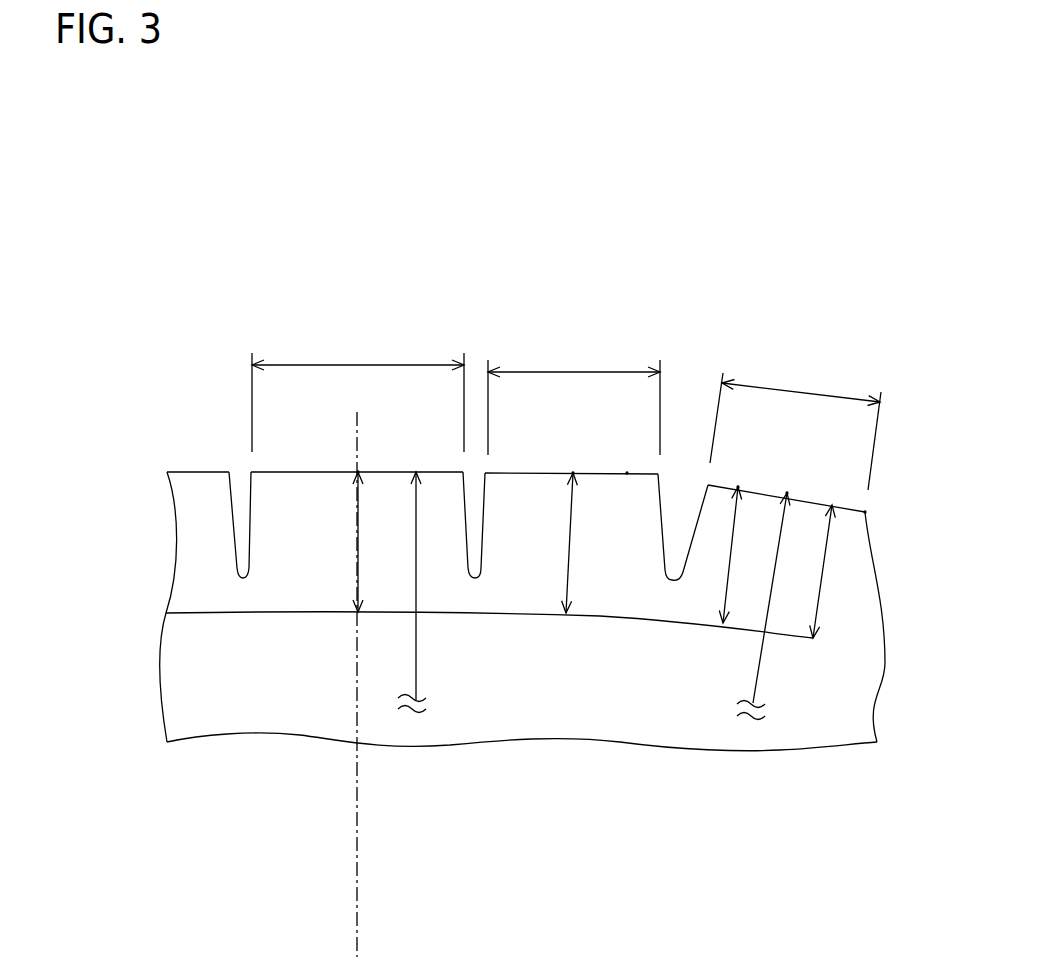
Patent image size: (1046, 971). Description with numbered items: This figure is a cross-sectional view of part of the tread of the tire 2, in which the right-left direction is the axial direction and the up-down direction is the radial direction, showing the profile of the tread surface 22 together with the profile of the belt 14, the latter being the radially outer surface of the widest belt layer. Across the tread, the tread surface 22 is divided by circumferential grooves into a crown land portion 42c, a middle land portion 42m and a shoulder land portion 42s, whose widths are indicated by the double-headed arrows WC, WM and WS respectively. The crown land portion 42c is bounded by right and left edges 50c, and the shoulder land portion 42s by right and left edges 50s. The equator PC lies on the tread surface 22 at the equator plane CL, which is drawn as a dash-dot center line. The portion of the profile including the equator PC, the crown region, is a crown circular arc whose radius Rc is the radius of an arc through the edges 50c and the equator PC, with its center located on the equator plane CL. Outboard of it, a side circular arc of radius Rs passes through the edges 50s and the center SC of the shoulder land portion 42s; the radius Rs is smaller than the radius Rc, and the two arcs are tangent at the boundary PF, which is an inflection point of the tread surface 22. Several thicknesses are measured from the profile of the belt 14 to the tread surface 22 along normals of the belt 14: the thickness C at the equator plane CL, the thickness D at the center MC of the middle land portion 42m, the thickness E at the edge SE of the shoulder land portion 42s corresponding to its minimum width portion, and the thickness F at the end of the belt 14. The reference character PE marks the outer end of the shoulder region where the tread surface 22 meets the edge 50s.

The tire 2 is at (138, 368).
The tread surface 22 is at (203, 472).
The belt 14 is at (193, 613).
The crown land portion 42c is at (388, 472).
The middle land portion 42m is at (520, 473).
The shoulder land portion 42s is at (832, 505).
The edges of the crown land portion 50c is at (252, 472).
The edges of the shoulder land portion 50s is at (706, 483).
The equator PC is at (358, 472).
The center of the middle land portion MC is at (573, 472).
The boundary PF is at (627, 473).
The edge of the shoulder land portion SE is at (738, 487).
The center of the shoulder land portion SC is at (787, 493).
The tread end point PE is at (865, 512).
The equator plane CL is at (358, 910).
The width of the crown land portion WC is at (358, 394).
The width of the middle land portion WM is at (574, 398).
The width of the shoulder land portion WS is at (795, 425).
The thickness at the equator plane C is at (349, 542).
The thickness at the middle land center D is at (563, 543).
The thickness at the shoulder land edge E is at (725, 555).
The thickness at the belt end F is at (819, 571).
The radius of the crown circular arc Rc is at (425, 592).
The radius of the side circular arc Rs is at (767, 606).